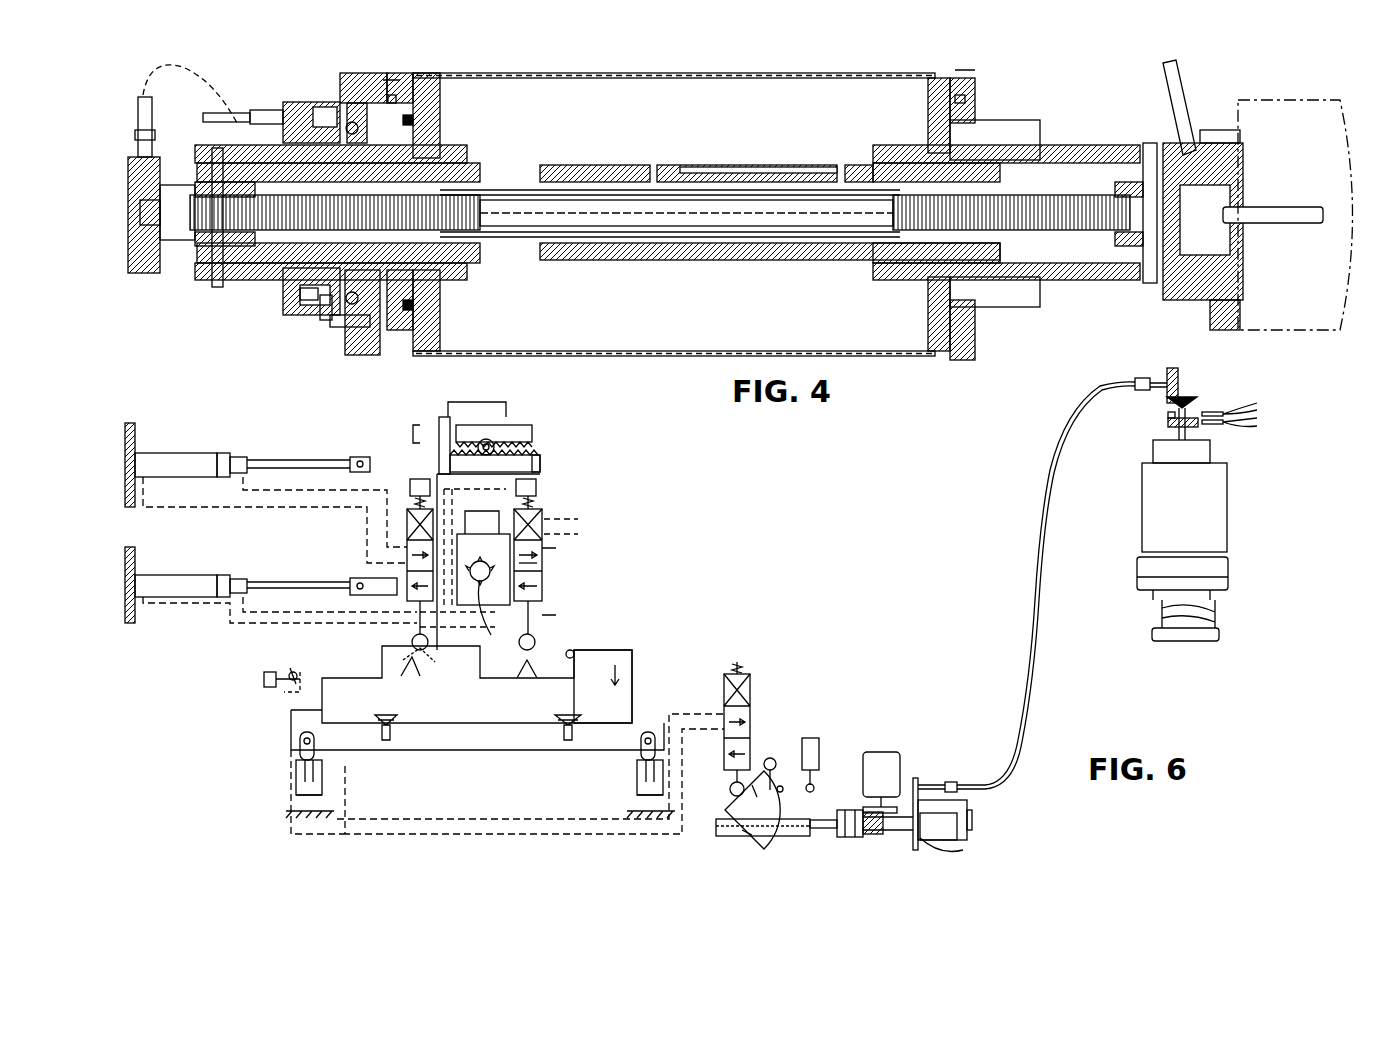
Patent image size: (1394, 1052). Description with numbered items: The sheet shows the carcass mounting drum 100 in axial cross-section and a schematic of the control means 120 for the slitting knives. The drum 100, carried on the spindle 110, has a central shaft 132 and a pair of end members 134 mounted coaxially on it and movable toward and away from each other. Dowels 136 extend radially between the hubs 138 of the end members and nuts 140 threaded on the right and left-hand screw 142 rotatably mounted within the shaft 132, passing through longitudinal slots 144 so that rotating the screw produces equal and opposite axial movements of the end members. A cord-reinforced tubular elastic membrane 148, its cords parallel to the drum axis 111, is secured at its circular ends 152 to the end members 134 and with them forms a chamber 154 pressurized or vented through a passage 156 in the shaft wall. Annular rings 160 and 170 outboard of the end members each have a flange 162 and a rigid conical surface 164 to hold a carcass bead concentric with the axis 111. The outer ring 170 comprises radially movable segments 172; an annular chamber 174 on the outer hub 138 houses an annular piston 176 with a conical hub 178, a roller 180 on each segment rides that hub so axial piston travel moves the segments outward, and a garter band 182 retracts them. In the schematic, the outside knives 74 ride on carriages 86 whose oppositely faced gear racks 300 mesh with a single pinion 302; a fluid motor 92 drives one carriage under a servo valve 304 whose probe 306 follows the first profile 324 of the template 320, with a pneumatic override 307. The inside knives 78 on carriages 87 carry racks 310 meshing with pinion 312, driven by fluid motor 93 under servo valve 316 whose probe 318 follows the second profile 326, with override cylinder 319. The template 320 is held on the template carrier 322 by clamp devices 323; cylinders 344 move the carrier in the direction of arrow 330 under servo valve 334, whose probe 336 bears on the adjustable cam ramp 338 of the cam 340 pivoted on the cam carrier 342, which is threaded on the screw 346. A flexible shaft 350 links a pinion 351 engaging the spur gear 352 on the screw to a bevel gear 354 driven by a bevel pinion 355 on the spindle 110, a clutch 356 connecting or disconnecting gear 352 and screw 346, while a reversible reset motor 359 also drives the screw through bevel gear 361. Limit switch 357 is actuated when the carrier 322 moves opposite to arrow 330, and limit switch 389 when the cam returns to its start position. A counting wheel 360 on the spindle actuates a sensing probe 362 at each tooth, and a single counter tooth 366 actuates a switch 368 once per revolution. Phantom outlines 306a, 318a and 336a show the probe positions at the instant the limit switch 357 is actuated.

In FIG. 4, the drum 100 is at (290, 88).
In FIG. 6, the drum 100 is at (1152, 626).
In FIG. 4, the spindle 110 is at (1295, 100).
In FIG. 6, the spindle 110 is at (1212, 622).
In FIG. 4, the axis 111 is at (585, 226).
In FIG. 4, the central shaft 132 is at (582, 165).
In FIG. 4, the end members 134 is at (442, 98).
In FIG. 4, the dowels 136 is at (217, 150).
In FIG. 4, the hubs 138 is at (452, 146).
In FIG. 4, the nuts 140 is at (200, 248).
In FIG. 4, the right and left-hand screw 142 is at (470, 225).
In FIG. 4, the longitudinal slots 144 is at (905, 170).
In FIG. 4, the elastic membrane 148 is at (758, 73).
In FIG. 4, the circular ends 152 is at (395, 100).
In FIG. 4, the chamber 154 is at (720, 318).
In FIG. 4, the passage 156 is at (750, 168).
In FIG. 4, the annular ring 160 is at (975, 78).
In FIG. 4, the flange 162 is at (388, 82).
In FIG. 4, the rigid conical surface 164 is at (395, 95).
In FIG. 4, the outer annular ring 170 is at (348, 355).
In FIG. 4, the radially movable segments 172 is at (360, 75).
In FIG. 4, the annular chamber 174 is at (325, 325).
In FIG. 4, the annular piston 176 is at (308, 320).
In FIG. 4, the conical hub 178 is at (315, 115).
In FIG. 4, the roller 180 is at (400, 130).
In FIG. 4, the garter band 182 is at (355, 78).
In FIG. 6, the fluid motor 92 is at (197, 458).
In FIG. 6, the fluid motor 93 is at (199, 577).
In FIG. 6, the outside knives 74 is at (466, 420).
In FIG. 6, the inside knives 78 is at (482, 536).
In FIG. 6, the knife carriages 86 is at (532, 430).
In FIG. 6, the knife carriages 87 is at (546, 550).
In FIG. 6, the control means 120 is at (610, 602).
In FIG. 6, the gear rack 300 is at (413, 440).
In FIG. 6, the pinion 302 is at (498, 440).
In FIG. 6, the servo valve 304 is at (407, 556).
In FIG. 6, the probe 306 is at (411, 642).
In FIG. 6, the phantom outline of probe 306a is at (380, 656).
In FIG. 6, the pneumatic override 307 is at (412, 478).
In FIG. 6, the gear rack 310 is at (542, 590).
In FIG. 6, the pinion 312 is at (492, 625).
In FIG. 6, the servo valve 316 is at (544, 565).
In FIG. 6, the probe 318 is at (536, 640).
In FIG. 6, the phantom outline of probe 318a is at (524, 680).
In FIG. 6, the pneumatic override cylinder 319 is at (536, 488).
In FIG. 6, the template 320 is at (475, 706).
In FIG. 6, the template carrier 322 is at (458, 750).
In FIG. 6, the clamp devices 323 is at (384, 740).
In FIG. 6, the first profile 324 is at (416, 665).
In FIG. 6, the second profile 326 is at (570, 658).
In FIG. 6, the arrow 330 is at (618, 665).
In FIG. 6, the servo valve 334 is at (724, 698).
In FIG. 6, the probe 336 is at (731, 789).
In FIG. 6, the phantom outline of probe 336a is at (773, 758).
In FIG. 6, the stock gage cam ramp 338 is at (778, 785).
In FIG. 6, the cam 340 is at (755, 825).
In FIG. 6, the cam carrier 342 is at (812, 815).
In FIG. 6, the cylinders 344 is at (296, 790).
In FIG. 6, the screw 346 is at (820, 830).
In FIG. 6, the flexible shaft 350 is at (1036, 584).
In FIG. 6, the pinion 351 is at (917, 780).
In FIG. 6, the spur gear 352 is at (963, 850).
In FIG. 6, the bevel gear 354 is at (1166, 372).
In FIG. 6, the bevel pinion 355 is at (1188, 398).
In FIG. 6, the clutch 356 is at (967, 810).
In FIG. 6, the limit switch 357 is at (266, 676).
In FIG. 6, the reset motor 359 is at (880, 758).
In FIG. 6, the counting wheel 360 is at (1168, 424).
In FIG. 6, the bevel gear 361 is at (880, 830).
In FIG. 6, the sensing probe 362 is at (1220, 425).
In FIG. 6, the counter tooth 366 is at (1168, 414).
In FIG. 6, the switch 368 is at (1215, 412).
In FIG. 6, the limit switch 389 is at (815, 738).